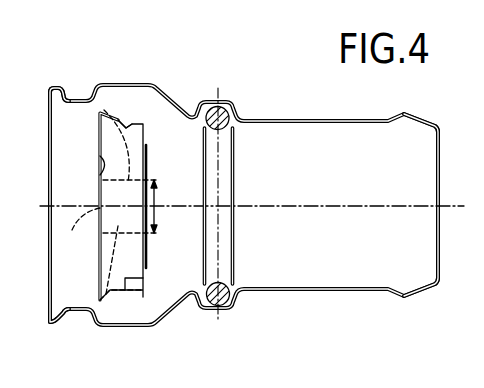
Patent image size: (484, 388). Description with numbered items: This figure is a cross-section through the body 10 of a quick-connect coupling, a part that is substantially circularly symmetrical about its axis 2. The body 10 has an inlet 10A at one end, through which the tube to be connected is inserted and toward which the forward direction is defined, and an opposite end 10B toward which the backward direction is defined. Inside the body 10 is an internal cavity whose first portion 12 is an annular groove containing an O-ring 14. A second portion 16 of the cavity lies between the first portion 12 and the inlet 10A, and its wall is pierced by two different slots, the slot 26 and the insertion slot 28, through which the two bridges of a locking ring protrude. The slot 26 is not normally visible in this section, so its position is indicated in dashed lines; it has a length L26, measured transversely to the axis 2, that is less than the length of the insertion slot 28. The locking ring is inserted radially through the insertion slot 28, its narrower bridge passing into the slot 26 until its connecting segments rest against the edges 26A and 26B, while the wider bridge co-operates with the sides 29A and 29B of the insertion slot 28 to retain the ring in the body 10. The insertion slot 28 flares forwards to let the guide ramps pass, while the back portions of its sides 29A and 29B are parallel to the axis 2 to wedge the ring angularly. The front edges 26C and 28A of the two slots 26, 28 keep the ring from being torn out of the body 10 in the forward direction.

The longitudinal axis 2 is at (262, 217).
The body 10 is at (327, 120).
The inlet 10A is at (57, 88).
The opposite end 10B is at (440, 126).
The first portion of the internal cavity 12 is at (223, 161).
The O-ring 14 is at (230, 277).
The second portion of the internal cavity 16 is at (180, 140).
The slot 26 is at (148, 184).
The edge of the slot 26A is at (94, 320).
The edge of the slot 26B is at (104, 110).
The front edge of the window 26C is at (78, 234).
The insertion slot 28 is at (130, 248).
The front edge of the window 28A is at (97, 159).
The side of the slot 29A is at (143, 277).
The side of the slot 29B is at (131, 127).
The length of the slot L26 is at (174, 206).